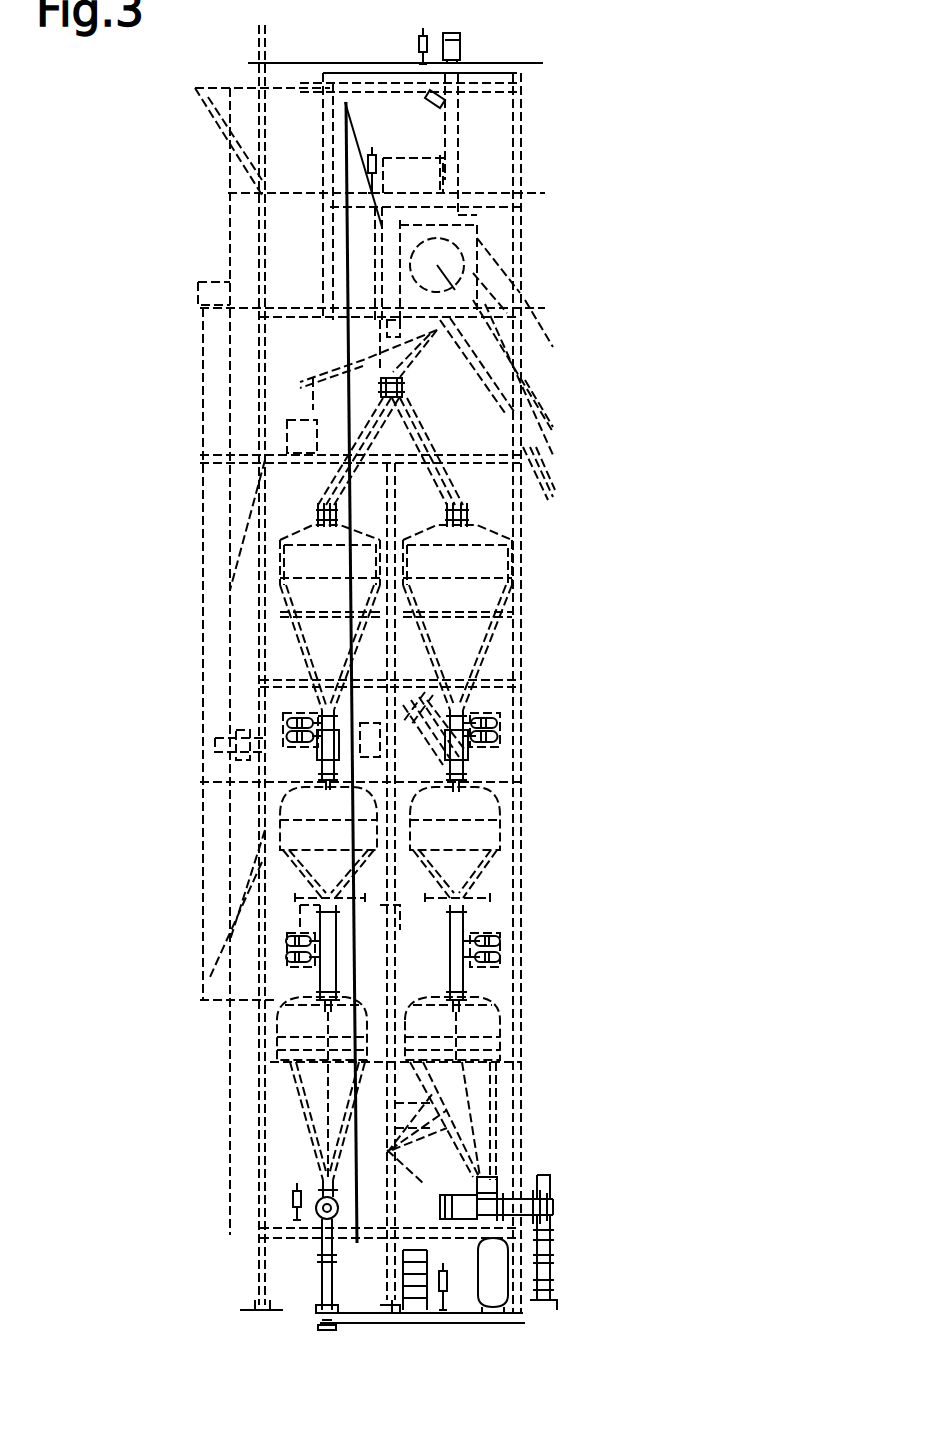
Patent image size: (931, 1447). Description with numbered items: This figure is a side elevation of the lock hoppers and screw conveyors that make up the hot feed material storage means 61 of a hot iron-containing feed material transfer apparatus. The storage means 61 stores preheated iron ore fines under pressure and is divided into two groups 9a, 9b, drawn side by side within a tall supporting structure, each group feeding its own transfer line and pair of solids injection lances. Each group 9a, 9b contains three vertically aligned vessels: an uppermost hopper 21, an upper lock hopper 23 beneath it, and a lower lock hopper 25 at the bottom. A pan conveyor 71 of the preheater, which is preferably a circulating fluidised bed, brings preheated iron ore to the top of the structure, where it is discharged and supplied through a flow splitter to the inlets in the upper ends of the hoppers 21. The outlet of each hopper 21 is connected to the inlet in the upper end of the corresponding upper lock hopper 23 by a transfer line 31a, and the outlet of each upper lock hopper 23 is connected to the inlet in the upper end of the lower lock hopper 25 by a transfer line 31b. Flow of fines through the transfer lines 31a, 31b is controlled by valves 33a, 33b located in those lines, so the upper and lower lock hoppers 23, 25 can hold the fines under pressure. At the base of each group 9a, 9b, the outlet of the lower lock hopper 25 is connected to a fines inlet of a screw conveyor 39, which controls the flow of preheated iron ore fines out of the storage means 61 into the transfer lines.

The first group of the storage means 9a is at (306, 486).
The second group of the storage means 9b is at (476, 508).
The hopper 21 is at (276, 583).
The upper lock hopper 23 is at (283, 838).
The lower lock hopper 25 is at (297, 1082).
The transfer line 31a is at (330, 713).
The transfer line 31b is at (320, 977).
The valve 33a is at (285, 731).
The valve 33b is at (288, 940).
The screw conveyor 39 is at (325, 1215).
The hot feed material storage means 61 is at (583, 364).
The pan conveyor 71 is at (515, 358).